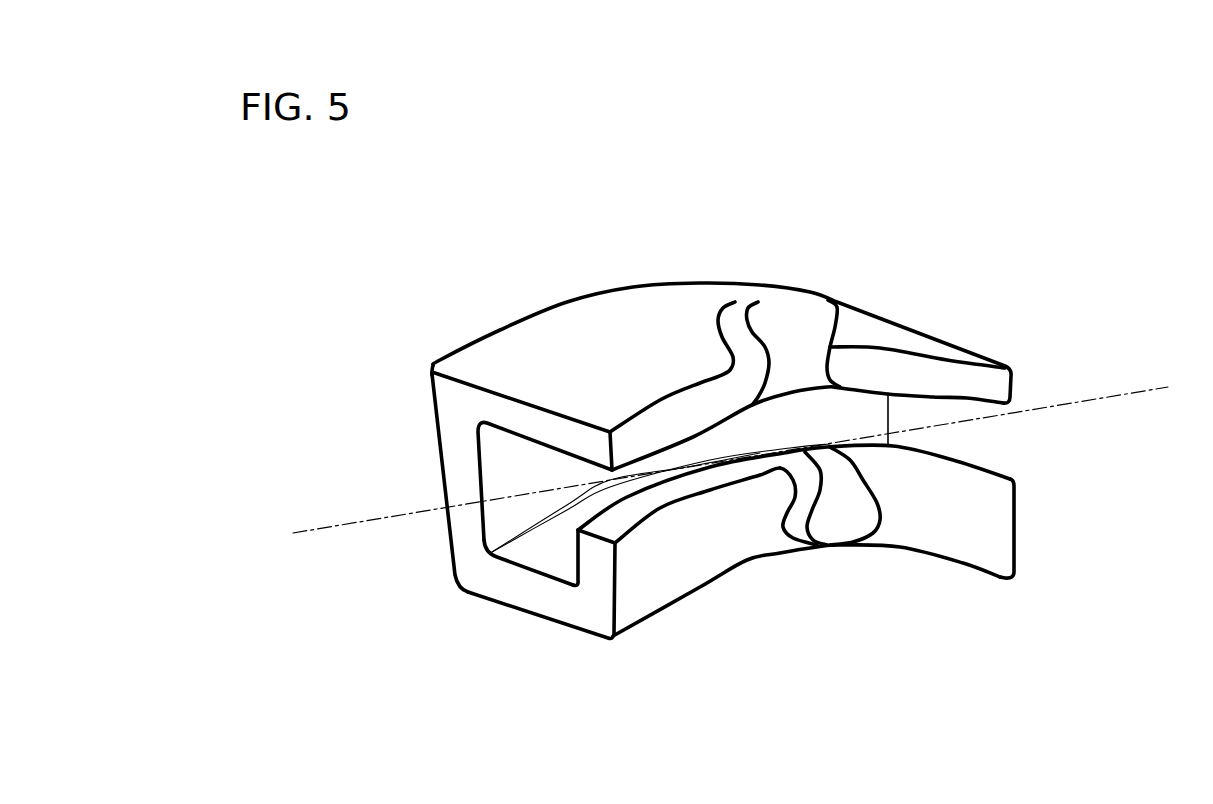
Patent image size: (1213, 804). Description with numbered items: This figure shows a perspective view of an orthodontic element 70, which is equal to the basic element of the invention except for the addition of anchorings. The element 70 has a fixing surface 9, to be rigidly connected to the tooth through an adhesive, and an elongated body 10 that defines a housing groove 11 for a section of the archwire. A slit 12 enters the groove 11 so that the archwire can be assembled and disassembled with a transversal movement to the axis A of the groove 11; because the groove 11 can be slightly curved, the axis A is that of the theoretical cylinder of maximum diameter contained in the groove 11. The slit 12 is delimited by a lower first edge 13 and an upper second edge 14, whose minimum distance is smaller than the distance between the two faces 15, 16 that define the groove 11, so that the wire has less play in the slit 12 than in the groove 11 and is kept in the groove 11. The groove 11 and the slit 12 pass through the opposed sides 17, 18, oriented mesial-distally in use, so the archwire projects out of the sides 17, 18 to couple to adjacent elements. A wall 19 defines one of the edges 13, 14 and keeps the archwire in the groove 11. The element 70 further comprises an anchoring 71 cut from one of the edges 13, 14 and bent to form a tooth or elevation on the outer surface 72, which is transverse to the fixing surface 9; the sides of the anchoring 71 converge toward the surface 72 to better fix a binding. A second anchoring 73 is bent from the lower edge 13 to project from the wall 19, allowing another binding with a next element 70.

The orthodontic element 70 is at (986, 296).
The anchoring 71 is at (800, 315).
The outer surface 72 is at (607, 318).
The second anchoring 73 is at (840, 545).
The fixing surface 9 is at (433, 438).
The elongated body 10 is at (457, 470).
The housing groove 11 is at (575, 563).
The slit 12 is at (972, 415).
The first edge 13 is at (635, 492).
The second edge 14 is at (723, 435).
The face 15 is at (528, 545).
The face 16 is at (512, 450).
The side 17 is at (1016, 510).
The side 18 is at (440, 397).
The wall 19 is at (922, 517).
The axis A is at (337, 525).